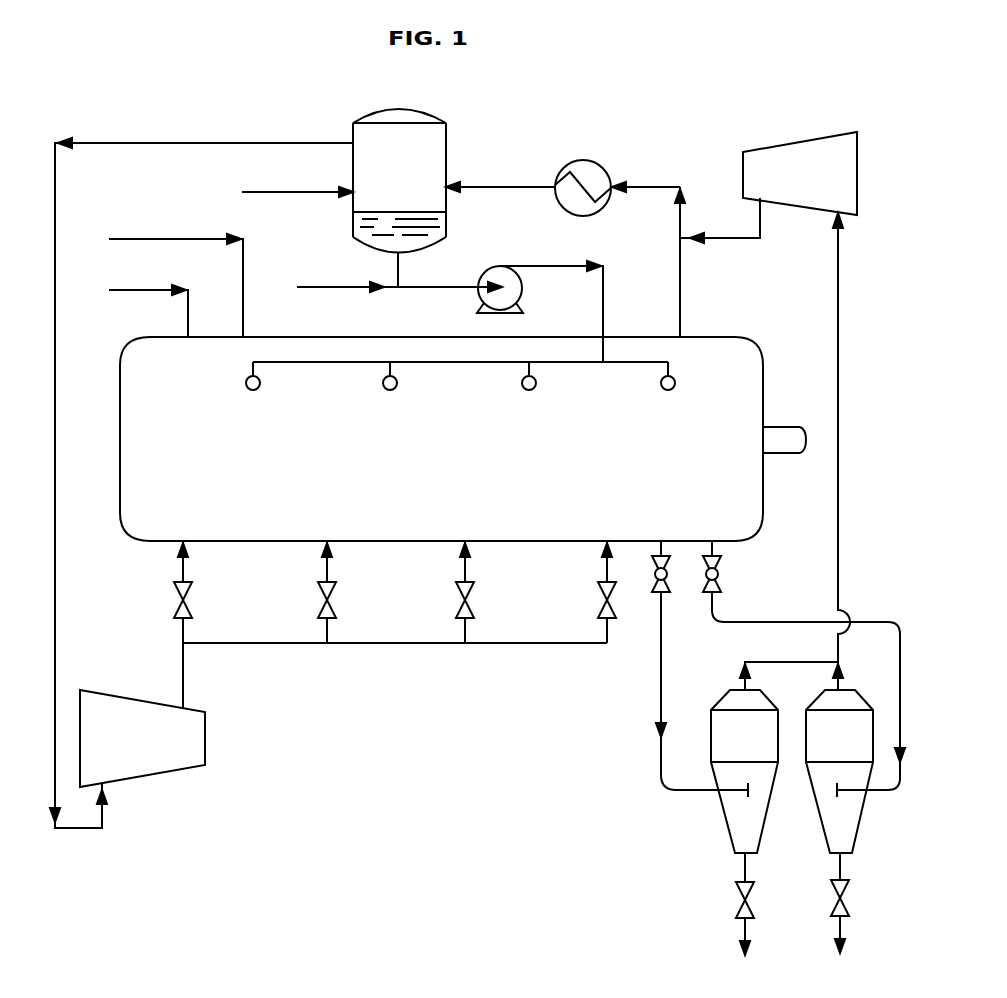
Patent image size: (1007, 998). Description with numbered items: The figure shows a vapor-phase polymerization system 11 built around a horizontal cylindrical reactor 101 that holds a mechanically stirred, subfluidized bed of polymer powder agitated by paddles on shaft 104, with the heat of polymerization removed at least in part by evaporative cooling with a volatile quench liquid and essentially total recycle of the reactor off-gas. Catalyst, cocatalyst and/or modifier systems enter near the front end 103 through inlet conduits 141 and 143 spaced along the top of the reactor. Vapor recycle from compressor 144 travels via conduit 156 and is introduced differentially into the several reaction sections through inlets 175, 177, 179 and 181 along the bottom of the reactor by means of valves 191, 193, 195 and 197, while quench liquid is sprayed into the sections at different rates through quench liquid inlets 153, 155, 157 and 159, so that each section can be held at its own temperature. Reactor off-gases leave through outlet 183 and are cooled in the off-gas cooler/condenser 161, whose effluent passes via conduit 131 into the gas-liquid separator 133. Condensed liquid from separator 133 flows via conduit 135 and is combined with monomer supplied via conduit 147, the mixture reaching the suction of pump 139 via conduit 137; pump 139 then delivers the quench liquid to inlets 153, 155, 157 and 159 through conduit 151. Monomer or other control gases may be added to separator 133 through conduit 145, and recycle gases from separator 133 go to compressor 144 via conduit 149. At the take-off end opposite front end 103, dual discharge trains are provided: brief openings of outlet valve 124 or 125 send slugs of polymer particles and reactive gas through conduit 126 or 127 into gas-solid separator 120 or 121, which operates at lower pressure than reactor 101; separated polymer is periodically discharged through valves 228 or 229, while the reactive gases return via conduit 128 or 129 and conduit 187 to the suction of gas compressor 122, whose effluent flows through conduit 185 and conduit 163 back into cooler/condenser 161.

The vapor-phase polymerization system 11 is at (633, 133).
The horizontal cylindrical reactor 101 is at (420, 498).
The front end 103 is at (130, 343).
The shaft 104 is at (777, 428).
The gas-solid separator 120 is at (728, 752).
The gas-solid separator 121 is at (823, 752).
The gas compressor 122 is at (785, 188).
The outlet valve 124 is at (652, 572).
The outlet valve 125 is at (724, 572).
The conduit 126 is at (661, 705).
The conduit 127 is at (877, 621).
The conduit 128 is at (757, 660).
The conduit 129 is at (832, 680).
The conduit 131 is at (527, 187).
The gas-liquid separator 133 is at (381, 175).
The conduit 135 is at (398, 276).
The conduit 137 is at (443, 288).
The pump 139 is at (512, 268).
The inlet conduit 141 is at (177, 239).
The inlet conduit 143 is at (157, 290).
The compressor 144 is at (120, 750).
The conduit 145 is at (273, 193).
The conduit 147 is at (335, 287).
The conduit 149 is at (57, 187).
The conduit 151 is at (603, 300).
The quench liquid inlet 153 is at (253, 390).
The quench liquid inlet 155 is at (390, 390).
The conduit 156 is at (183, 663).
The quench liquid inlet 157 is at (529, 390).
The quench liquid inlet 159 is at (668, 390).
The off-gas cooler/condenser 161 is at (583, 160).
The conduit 163 is at (666, 186).
The inlet 175 is at (183, 570).
The inlet 177 is at (327, 570).
The inlet 179 is at (465, 570).
The inlet 181 is at (607, 570).
The outlet 183 is at (680, 337).
The conduit 185 is at (737, 239).
The conduit 187 is at (838, 318).
The valve 191 is at (174, 600).
The valve 193 is at (318, 600).
The valve 195 is at (456, 600).
The valve 197 is at (598, 600).
The valve 228 is at (736, 897).
The valve 229 is at (833, 904).